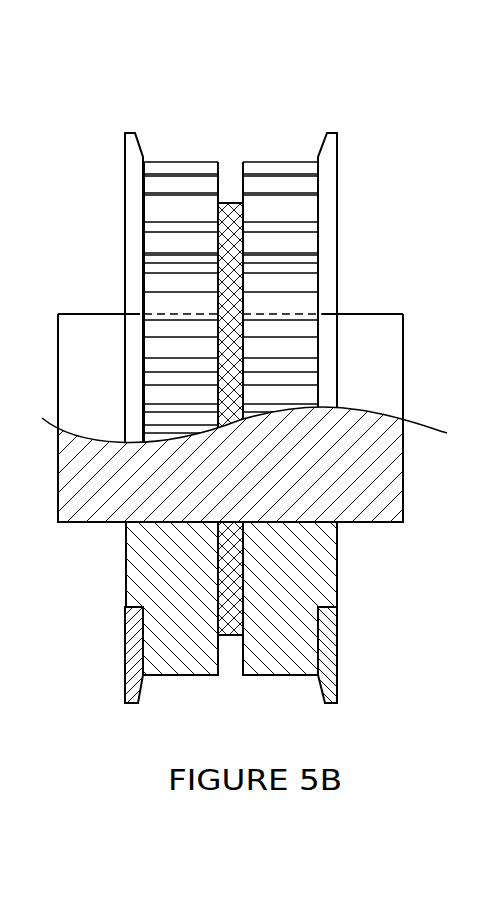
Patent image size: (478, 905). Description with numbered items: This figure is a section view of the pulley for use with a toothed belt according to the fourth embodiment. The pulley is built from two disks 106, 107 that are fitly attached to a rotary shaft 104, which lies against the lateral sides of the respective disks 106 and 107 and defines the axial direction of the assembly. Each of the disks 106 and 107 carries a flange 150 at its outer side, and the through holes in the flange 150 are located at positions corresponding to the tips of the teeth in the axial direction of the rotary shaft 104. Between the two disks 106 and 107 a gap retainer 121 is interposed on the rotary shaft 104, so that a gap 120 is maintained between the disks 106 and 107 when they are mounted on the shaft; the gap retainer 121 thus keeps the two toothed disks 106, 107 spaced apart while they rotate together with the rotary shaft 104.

The rotary shaft 104 is at (78, 342).
The disk 106 is at (173, 167).
The disk 107 is at (283, 177).
The gap 120 is at (235, 156).
The gap retainer 121 is at (243, 207).
The flange 150 is at (130, 147).